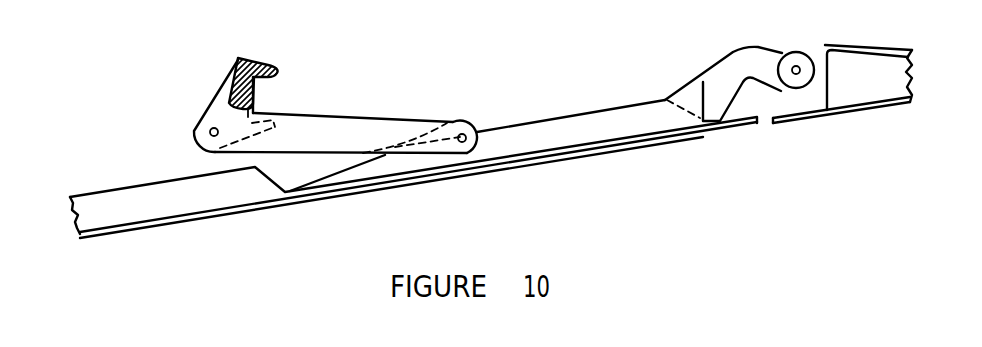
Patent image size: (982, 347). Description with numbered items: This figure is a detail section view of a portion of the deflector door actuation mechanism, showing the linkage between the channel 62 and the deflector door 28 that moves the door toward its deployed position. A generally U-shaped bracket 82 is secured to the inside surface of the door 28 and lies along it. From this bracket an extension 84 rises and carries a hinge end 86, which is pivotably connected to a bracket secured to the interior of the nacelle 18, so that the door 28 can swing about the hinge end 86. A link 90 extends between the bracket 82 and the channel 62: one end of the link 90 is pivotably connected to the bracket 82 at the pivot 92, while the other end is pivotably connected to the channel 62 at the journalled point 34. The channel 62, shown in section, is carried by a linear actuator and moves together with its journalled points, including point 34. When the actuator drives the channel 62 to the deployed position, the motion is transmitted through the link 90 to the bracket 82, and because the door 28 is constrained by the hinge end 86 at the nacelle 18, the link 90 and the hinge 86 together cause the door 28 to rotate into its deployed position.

The nacelle 18 is at (843, 110).
The deflector door 28 is at (684, 139).
The point 34 is at (210, 131).
The channel 62 is at (280, 77).
The U-shaped bracket 82 is at (552, 119).
The extension 84 is at (716, 58).
The hinge end 86 is at (806, 52).
The link 90 is at (357, 116).
The pivot 92 is at (462, 133).